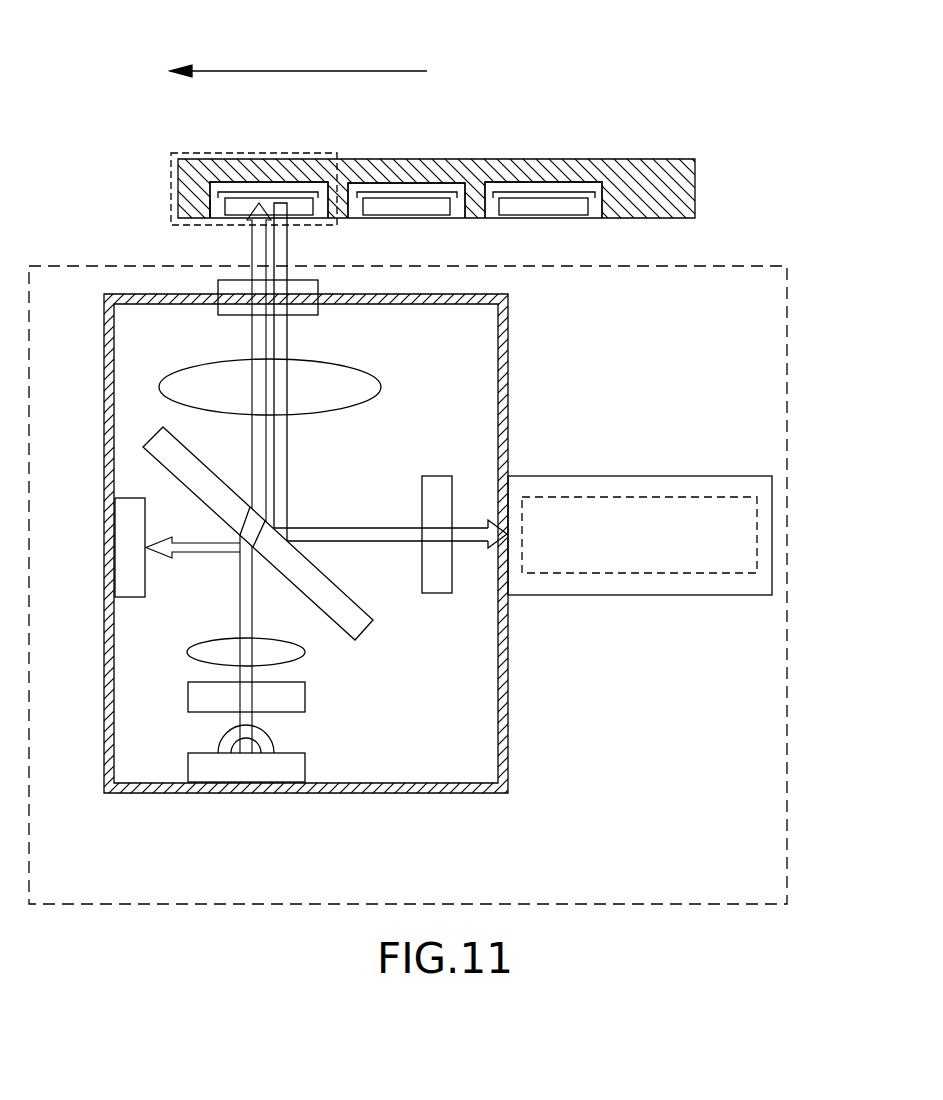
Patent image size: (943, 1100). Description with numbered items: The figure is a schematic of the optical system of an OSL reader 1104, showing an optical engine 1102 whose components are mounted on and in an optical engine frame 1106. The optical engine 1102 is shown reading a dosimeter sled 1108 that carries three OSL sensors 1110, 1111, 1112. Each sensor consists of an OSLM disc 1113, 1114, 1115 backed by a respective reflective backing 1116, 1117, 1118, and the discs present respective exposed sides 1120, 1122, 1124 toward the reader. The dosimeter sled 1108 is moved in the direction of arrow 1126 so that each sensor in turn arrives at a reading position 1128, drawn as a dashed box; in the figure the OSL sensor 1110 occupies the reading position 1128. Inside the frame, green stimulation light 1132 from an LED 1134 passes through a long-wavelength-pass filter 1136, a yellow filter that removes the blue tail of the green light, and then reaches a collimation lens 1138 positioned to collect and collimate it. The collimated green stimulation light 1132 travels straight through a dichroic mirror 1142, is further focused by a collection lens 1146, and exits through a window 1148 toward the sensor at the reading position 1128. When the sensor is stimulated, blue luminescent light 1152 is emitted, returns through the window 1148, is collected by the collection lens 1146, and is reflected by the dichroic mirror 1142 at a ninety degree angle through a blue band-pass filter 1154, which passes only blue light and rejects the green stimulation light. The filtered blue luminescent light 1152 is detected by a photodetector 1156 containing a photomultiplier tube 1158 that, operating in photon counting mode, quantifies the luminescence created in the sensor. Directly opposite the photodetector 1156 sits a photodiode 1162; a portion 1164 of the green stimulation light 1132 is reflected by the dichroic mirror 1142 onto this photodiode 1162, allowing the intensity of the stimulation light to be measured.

The optical engine 1102 is at (376, 543).
The OSL reader 1104 is at (788, 634).
The optical engine frame 1106 is at (510, 330).
The dosimeter sled 1108 is at (687, 178).
The OSL sensor 1110 is at (300, 208).
The OSL sensor 1111 is at (410, 208).
The OSL sensor 1112 is at (547, 207).
The OSLM disc 1113 is at (240, 202).
The OSLM disc 1114 is at (380, 202).
The OSLM disc 1115 is at (518, 202).
The reflective backing 1116 is at (295, 192).
The reflective backing 1117 is at (425, 192).
The reflective backing 1118 is at (560, 192).
The exposed side 1120 is at (232, 220).
The exposed side 1122 is at (400, 235).
The exposed side 1124 is at (523, 236).
The arrow 1126 is at (358, 70).
The reading position 1128 is at (171, 180).
The green stimulation light 1132 is at (242, 592).
The LED 1134 is at (293, 770).
The long-wavelength-pass filter 1136 is at (290, 697).
The collimation lens 1138 is at (285, 650).
The dichroic mirror 1142 is at (367, 627).
The collection lens 1146 is at (380, 386).
The window 1148 is at (218, 308).
The blue luminescent light 1152 is at (282, 468).
The blue band-pass filter 1154 is at (435, 477).
The photodetector 1156 is at (577, 587).
The photomultiplier tube 1158 is at (663, 572).
The photodiode 1162 is at (132, 597).
The portion of green stimulation light 1164 is at (202, 548).